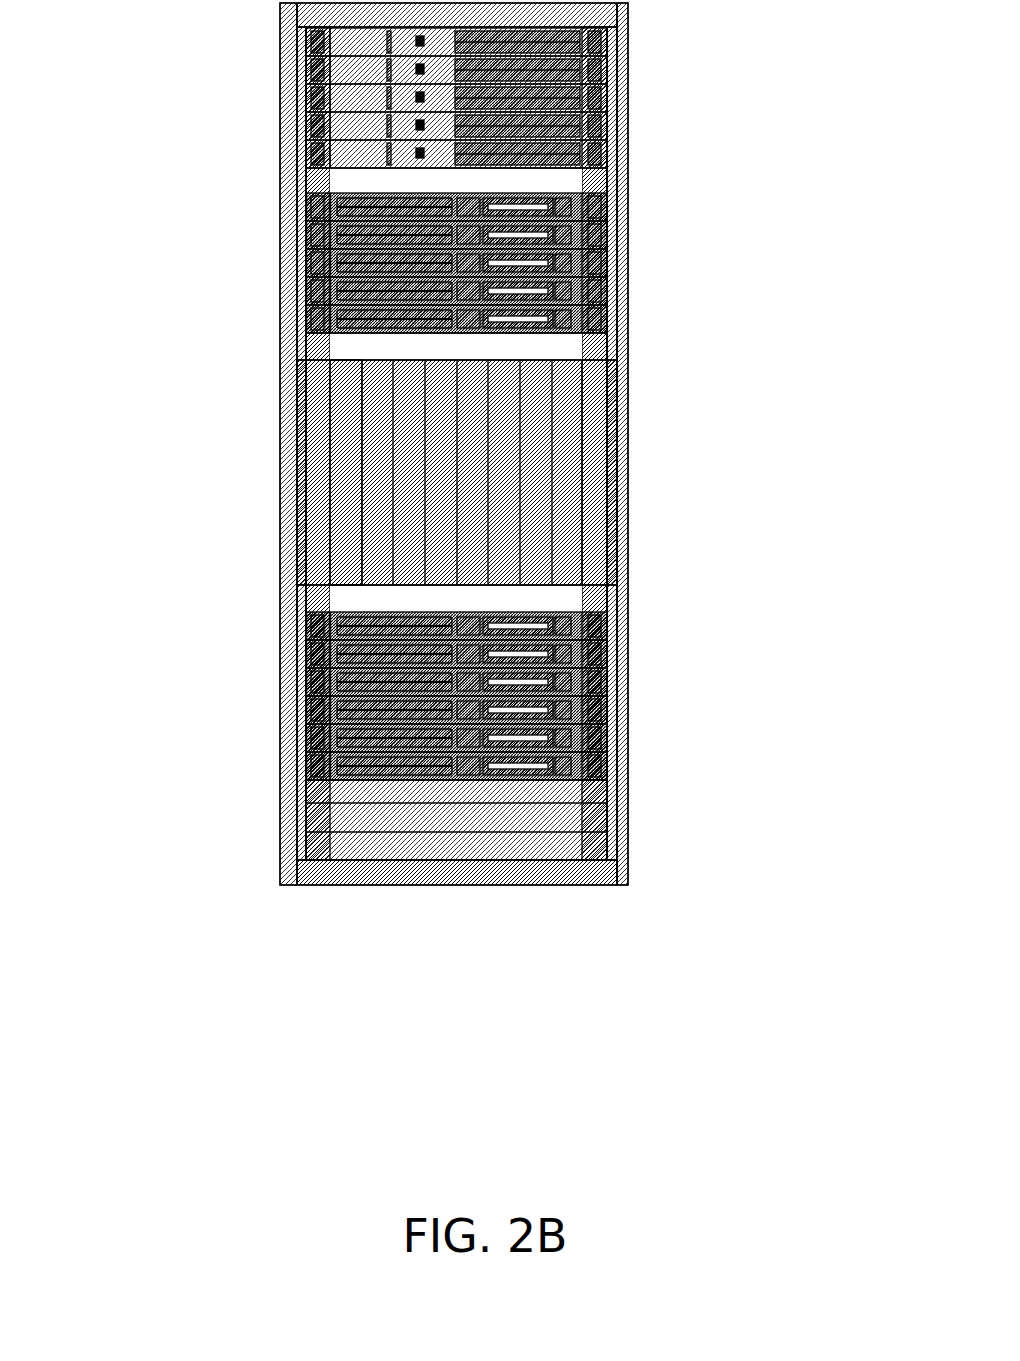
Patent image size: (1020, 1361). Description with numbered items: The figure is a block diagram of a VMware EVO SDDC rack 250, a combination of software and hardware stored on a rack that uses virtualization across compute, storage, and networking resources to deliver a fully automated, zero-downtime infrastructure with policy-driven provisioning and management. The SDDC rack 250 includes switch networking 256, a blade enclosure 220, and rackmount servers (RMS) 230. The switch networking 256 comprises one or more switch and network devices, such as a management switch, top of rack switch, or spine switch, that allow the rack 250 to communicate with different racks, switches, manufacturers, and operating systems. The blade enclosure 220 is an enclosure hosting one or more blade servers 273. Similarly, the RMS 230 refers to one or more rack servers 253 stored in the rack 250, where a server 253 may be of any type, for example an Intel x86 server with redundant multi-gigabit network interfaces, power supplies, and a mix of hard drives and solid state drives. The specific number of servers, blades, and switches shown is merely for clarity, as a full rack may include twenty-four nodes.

The SDDC rack 250 is at (462, 444).
The switch networking 256 is at (660, 167).
The rackmount servers (RMS) 230 is at (477, 486).
The rack server 253 is at (322, 262).
The blade enclosure 220 is at (495, 472).
The blade server 273 is at (345, 390).